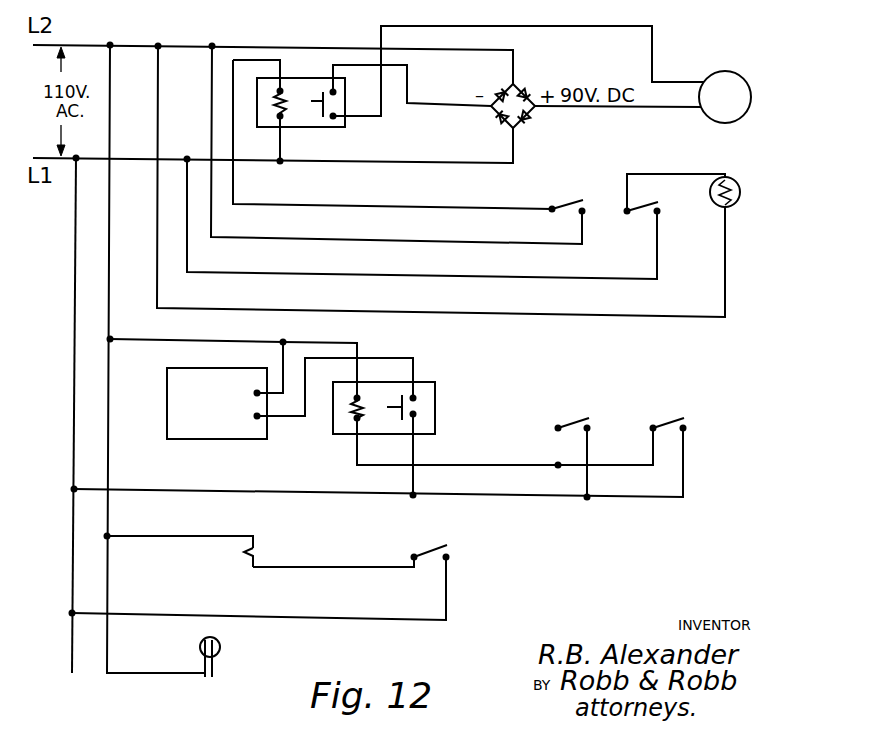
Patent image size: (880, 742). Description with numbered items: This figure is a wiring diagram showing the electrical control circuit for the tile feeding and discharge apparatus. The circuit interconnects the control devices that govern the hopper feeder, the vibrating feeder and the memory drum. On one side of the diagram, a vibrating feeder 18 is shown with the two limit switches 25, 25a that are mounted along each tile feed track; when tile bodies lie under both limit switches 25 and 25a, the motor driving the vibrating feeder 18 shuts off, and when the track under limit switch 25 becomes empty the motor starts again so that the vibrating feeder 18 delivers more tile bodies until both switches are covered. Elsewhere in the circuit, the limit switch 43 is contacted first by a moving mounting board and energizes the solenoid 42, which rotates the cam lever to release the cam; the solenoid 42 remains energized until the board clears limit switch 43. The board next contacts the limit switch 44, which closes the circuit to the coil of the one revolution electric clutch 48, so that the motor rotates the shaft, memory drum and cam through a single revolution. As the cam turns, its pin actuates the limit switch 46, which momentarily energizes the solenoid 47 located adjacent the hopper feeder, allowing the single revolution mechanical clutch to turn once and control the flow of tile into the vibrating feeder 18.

The vibratory feeder 18 is at (217, 403).
The limit switch 25 is at (576, 418).
The limit switch 25a is at (672, 418).
The solenoid 42 is at (742, 185).
The limit switch 43 is at (660, 206).
The limit switch 44 is at (572, 200).
The limit switch 46 is at (418, 548).
The solenoid 47 is at (258, 550).
The electric clutch 48 is at (740, 72).